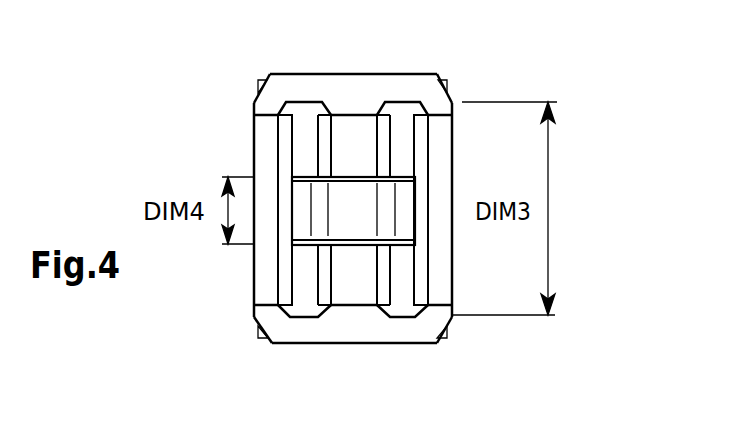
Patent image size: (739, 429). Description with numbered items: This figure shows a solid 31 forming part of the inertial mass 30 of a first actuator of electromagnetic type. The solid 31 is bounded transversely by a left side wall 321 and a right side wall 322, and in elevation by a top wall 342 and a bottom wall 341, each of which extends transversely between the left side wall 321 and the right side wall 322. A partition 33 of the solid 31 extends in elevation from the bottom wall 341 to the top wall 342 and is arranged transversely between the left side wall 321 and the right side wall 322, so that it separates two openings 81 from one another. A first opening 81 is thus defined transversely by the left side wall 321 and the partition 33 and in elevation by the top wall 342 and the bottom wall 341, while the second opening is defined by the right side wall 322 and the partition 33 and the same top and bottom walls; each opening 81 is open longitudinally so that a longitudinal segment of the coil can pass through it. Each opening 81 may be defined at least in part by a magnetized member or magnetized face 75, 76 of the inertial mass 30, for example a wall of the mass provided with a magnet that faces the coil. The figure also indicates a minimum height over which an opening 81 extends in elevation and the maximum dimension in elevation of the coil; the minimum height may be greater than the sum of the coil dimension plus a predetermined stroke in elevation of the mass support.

The inertial mass 30 is at (523, 78).
The solid 31 is at (403, 92).
The partition 33 is at (360, 288).
The rib 75 is at (283, 129).
The magnetized member 76 is at (420, 128).
The opening 81 is at (305, 300).
The left side wall 321 is at (252, 284).
The right side wall 322 is at (454, 284).
The bottom wall 341 is at (335, 332).
The top wall 342 is at (290, 74).